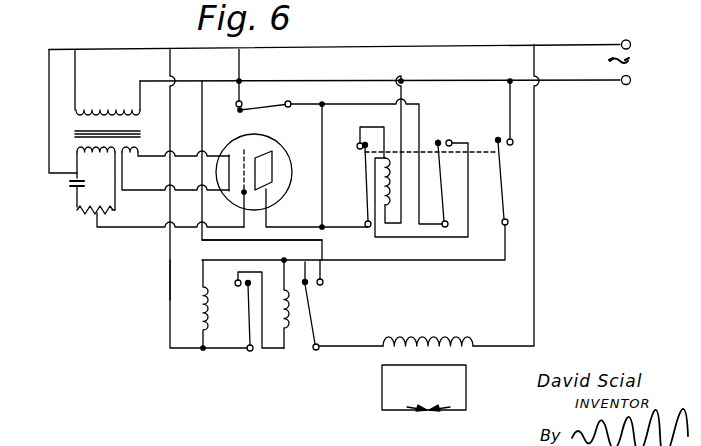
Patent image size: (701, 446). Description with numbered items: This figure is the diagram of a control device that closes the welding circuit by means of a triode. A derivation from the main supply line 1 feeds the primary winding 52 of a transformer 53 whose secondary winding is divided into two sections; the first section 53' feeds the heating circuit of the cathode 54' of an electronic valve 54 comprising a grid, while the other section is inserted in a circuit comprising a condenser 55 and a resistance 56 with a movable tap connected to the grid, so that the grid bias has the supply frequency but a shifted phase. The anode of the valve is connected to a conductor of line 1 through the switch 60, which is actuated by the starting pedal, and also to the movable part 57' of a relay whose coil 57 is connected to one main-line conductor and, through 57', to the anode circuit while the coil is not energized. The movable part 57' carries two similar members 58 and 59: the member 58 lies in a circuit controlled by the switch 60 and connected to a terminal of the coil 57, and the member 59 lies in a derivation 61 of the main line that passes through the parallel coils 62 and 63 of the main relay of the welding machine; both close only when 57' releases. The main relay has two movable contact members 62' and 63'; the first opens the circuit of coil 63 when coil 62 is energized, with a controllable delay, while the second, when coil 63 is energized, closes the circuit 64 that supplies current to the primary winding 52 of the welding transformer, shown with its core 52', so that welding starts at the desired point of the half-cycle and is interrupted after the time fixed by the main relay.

The main supply line 1 is at (393, 45).
The primary winding 52 is at (428, 328).
The core box 52' is at (424, 387).
The transformer 53 is at (107, 94).
The first section of secondary winding 53' is at (175, 168).
The electronic valve 54 is at (254, 163).
The cathode 54' is at (216, 188).
The condenser 55 is at (72, 190).
The resistance 56 is at (84, 215).
The relay coil 57 is at (420, 188).
The movable part of relay 57' is at (403, 156).
The member 58 is at (443, 192).
The member 59 is at (505, 188).
The switch 60 is at (263, 102).
The derivation 61 is at (170, 279).
The main relay coil 62 is at (173, 305).
The movable contact member 62' is at (248, 321).
The main relay coil 63 is at (277, 315).
The movable contact member 63' is at (343, 305).
The circuit 64 is at (288, 238).